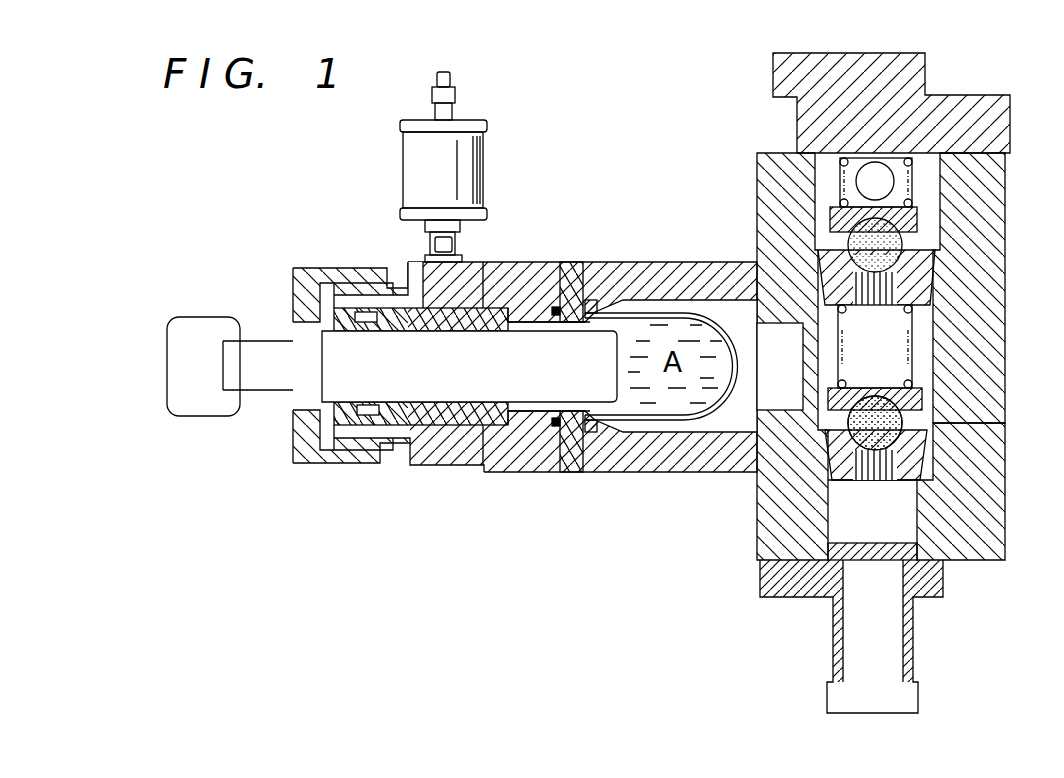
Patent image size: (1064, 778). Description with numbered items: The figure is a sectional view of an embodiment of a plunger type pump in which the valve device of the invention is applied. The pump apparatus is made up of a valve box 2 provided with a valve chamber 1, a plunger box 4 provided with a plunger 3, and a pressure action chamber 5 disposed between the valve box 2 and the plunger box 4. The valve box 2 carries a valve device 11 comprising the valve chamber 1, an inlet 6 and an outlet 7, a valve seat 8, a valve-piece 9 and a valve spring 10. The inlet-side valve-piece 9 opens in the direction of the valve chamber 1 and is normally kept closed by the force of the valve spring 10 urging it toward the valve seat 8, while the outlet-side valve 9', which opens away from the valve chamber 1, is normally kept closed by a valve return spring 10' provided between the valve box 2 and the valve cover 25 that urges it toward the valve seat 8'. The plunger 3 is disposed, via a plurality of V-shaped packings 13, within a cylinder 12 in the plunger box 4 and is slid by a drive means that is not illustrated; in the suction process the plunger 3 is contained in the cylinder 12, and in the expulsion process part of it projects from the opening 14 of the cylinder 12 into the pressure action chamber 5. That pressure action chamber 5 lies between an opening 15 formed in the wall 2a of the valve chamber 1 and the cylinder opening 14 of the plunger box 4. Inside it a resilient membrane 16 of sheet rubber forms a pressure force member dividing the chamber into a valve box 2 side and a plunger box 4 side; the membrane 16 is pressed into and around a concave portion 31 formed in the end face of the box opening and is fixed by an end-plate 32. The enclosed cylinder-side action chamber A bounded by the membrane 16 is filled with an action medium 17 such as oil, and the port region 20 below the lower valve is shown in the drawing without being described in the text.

The valve chamber 1 is at (923, 338).
The valve box 2 is at (1007, 205).
The wall of the valve chamber 2a is at (760, 532).
The plunger 3 is at (490, 402).
The plunger box 4 is at (510, 472).
The pressure action chamber 5 is at (660, 472).
The inlet 6 is at (908, 500).
The outlet 7 is at (922, 241).
The valve seat 8 is at (941, 439).
The valve seat 8' is at (937, 281).
The valve-piece 9 is at (942, 419).
The outlet-side valve 9' is at (815, 202).
The valve spring 10 is at (951, 346).
The valve return spring 10' is at (952, 180).
The valve device 11 is at (931, 228).
The cylinder 12 is at (553, 427).
The V-shaped packings 13 is at (437, 425).
The opening of the cylinder 14 is at (575, 433).
The opening 15 is at (763, 395).
The resilient membrane 16 is at (712, 300).
The action medium 17 is at (650, 327).
The outlet port 20 is at (873, 484).
The valve cover 25 is at (915, 80).
The concave portion 31 is at (592, 302).
The end-plate 32 is at (570, 270).